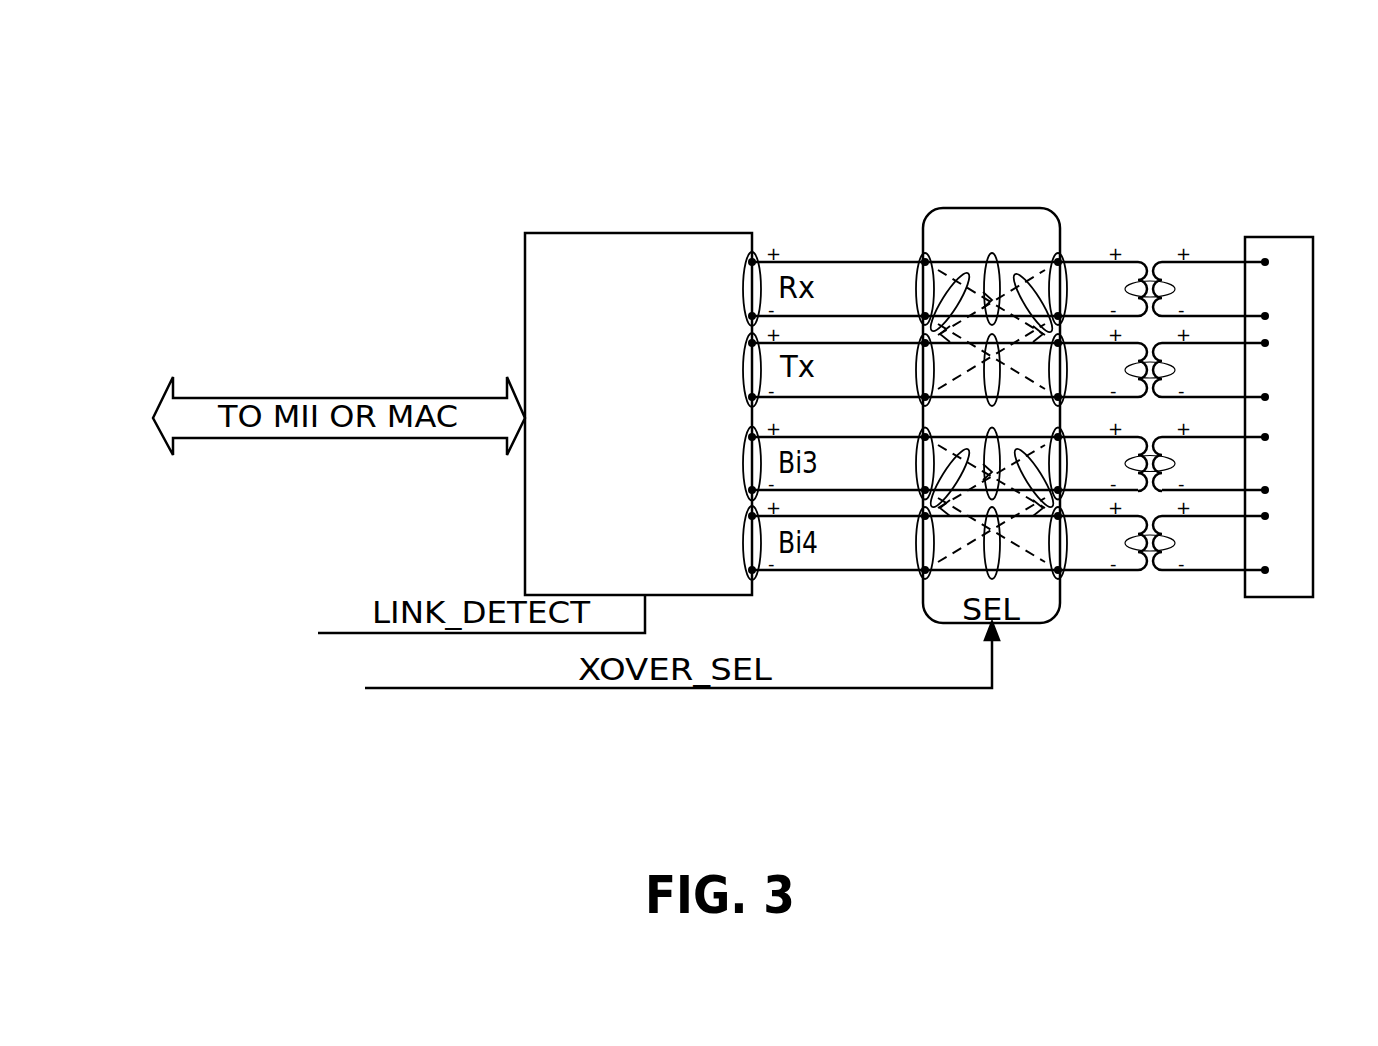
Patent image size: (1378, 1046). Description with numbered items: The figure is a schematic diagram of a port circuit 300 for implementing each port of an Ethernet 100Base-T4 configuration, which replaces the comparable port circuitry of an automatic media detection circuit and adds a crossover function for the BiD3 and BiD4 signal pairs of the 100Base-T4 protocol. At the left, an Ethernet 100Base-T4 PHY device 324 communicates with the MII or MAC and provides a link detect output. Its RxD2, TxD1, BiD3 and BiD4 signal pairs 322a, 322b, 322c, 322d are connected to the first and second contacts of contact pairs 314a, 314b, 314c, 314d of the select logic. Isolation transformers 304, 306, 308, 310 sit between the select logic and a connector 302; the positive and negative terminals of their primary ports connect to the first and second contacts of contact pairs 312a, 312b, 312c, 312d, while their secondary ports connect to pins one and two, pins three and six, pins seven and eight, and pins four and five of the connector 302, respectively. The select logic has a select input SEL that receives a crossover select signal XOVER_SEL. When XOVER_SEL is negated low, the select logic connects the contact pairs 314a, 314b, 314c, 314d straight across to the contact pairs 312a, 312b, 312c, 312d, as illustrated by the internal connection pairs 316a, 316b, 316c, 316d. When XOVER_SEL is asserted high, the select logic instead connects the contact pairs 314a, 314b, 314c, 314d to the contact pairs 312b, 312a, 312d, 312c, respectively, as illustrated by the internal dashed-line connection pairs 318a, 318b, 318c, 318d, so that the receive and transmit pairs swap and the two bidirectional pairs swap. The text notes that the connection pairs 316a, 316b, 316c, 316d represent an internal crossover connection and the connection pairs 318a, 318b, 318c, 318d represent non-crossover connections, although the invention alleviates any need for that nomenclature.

The port circuit 300 is at (1255, 132).
The connector 302 is at (1267, 237).
The isolation transformer 304 is at (1175, 289).
The isolation transformer 306 is at (1175, 370).
The isolation transformer 308 is at (1175, 463).
The isolation transformer 310 is at (1175, 543).
The contact pair 312a is at (1063, 258).
The contact pair 312b is at (1062, 335).
The contact pair 312c is at (1063, 445).
The contact pair 312d is at (1060, 525).
The contact pair 314a is at (918, 282).
The contact pair 314b is at (921, 345).
The contact pair 314c is at (921, 488).
The contact pair 314d is at (920, 545).
The internal connection pair 316a is at (992, 258).
The internal connection pair 316b is at (985, 370).
The internal connection pair 316c is at (997, 480).
The internal connection pair 316d is at (988, 560).
The internal dashed-line connection pair 318a is at (965, 270).
The internal dashed-line connection pair 318b is at (965, 448).
The internal dashed-line connection pair 318c is at (1018, 270).
The internal dashed-line connection pair 318d is at (1022, 448).
The signal pair 322a is at (749, 262).
The signal pair 322b is at (749, 338).
The signal pair 322c is at (746, 490).
The signal pair 322d is at (746, 518).
The Ethernet 100Base-T4 PHY device 324 is at (571, 233).